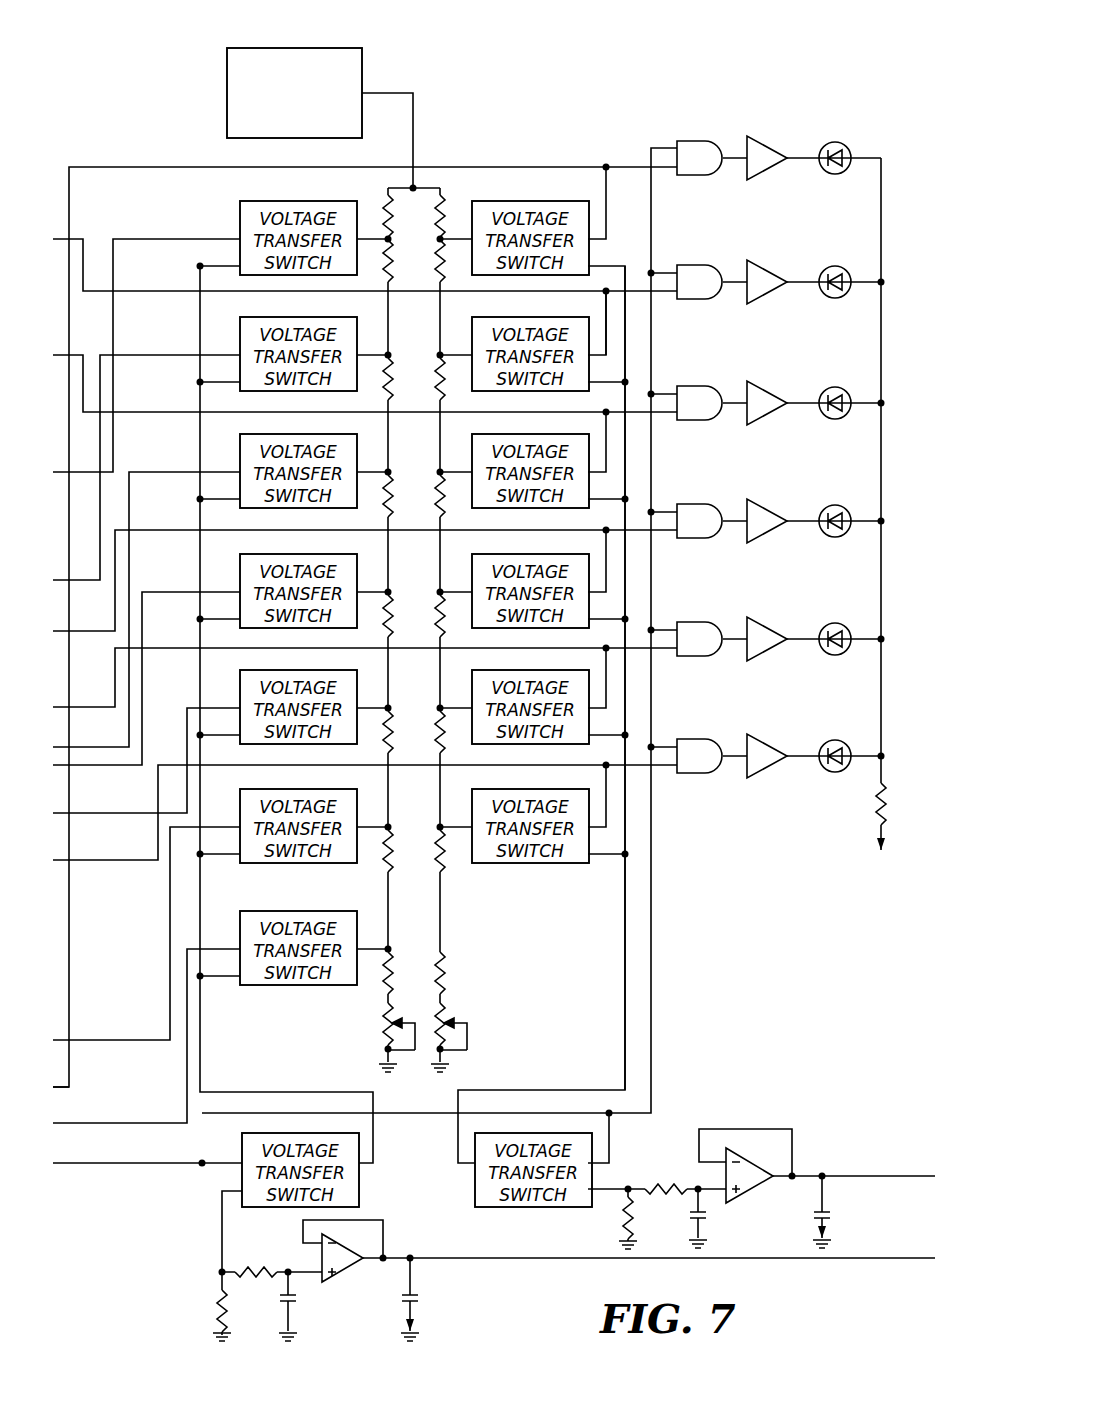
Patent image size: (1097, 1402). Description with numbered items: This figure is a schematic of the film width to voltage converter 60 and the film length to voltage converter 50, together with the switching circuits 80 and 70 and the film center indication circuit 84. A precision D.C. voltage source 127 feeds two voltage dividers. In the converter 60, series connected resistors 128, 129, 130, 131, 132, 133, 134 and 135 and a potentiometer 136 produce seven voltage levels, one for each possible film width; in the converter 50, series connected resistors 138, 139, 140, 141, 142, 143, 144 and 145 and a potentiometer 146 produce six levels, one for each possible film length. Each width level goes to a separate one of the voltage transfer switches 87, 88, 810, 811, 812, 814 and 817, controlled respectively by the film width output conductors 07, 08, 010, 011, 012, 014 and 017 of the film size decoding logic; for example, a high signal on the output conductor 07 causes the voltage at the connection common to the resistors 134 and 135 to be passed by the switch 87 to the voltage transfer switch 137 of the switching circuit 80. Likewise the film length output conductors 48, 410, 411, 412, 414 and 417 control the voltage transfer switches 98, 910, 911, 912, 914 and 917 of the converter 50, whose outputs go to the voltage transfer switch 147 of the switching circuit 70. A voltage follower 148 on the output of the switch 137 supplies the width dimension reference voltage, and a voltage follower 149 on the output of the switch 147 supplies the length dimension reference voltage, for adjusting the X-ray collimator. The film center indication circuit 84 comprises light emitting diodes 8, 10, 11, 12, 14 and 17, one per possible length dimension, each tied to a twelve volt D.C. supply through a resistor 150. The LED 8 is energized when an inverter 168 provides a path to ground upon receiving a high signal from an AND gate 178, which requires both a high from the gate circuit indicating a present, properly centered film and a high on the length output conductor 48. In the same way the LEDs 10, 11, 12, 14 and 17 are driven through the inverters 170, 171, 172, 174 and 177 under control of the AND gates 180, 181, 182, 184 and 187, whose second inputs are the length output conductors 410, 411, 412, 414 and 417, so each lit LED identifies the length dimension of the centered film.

The precision D.C. voltage source 127 is at (314, 46).
The film width to voltage converter 60 is at (181, 150).
The film length to voltage converter 50 is at (559, 153).
The film center indication circuit 84 is at (764, 131).
The switching circuit 80 is at (205, 1214).
The switching circuit 70 is at (675, 1141).
The voltage transfer switch 817 is at (238, 200).
The voltage transfer switch 814 is at (318, 317).
The voltage transfer switch 812 is at (327, 424).
The voltage transfer switch 811 is at (327, 544).
The voltage transfer switch 810 is at (327, 660).
The voltage transfer switch 88 is at (300, 864).
The voltage transfer switch 87 is at (296, 986).
The voltage transfer switch 917 is at (558, 201).
The voltage transfer switch 914 is at (550, 317).
The voltage transfer switch 912 is at (559, 424).
The voltage transfer switch 911 is at (559, 544).
The voltage transfer switch 910 is at (559, 660).
The voltage transfer switch 98 is at (533, 864).
The voltage transfer switch 137 is at (359, 1187).
The voltage transfer switch 147 is at (535, 1208).
The resistor 128 is at (383, 198).
The resistor 129 is at (395, 268).
The resistor 130 is at (394, 360).
The resistor 131 is at (394, 486).
The resistor 132 is at (394, 608).
The resistor 133 is at (394, 728).
The resistor 134 is at (396, 842).
The resistor 135 is at (394, 967).
The potentiometer 136 is at (384, 1022).
The resistor 138 is at (442, 200).
The resistor 139 is at (442, 262).
The resistor 140 is at (444, 386).
The resistor 141 is at (446, 504).
The resistor 142 is at (446, 622).
The resistor 143 is at (437, 740).
The resistor 144 is at (436, 862).
The resistor 145 is at (450, 980).
The potentiometer 146 is at (450, 1020).
The voltage follower 148 is at (366, 1315).
The voltage follower 149 is at (781, 1232).
The resistor 150 is at (887, 801).
The AND gate 187 is at (703, 140).
The AND gate 184 is at (705, 266).
The AND gate 182 is at (705, 387).
The AND gate 181 is at (705, 505).
The AND gate 180 is at (705, 623).
The AND gate 178 is at (704, 740).
The inverter 177 is at (774, 150).
The inverter 174 is at (772, 272).
The inverter 172 is at (773, 392).
The inverter 171 is at (773, 508).
The inverter 170 is at (773, 626).
The inverter 168 is at (768, 770).
The light emitting diode 17 is at (833, 175).
The light emitting diode 14 is at (835, 266).
The light emitting diode 12 is at (835, 387).
The light emitting diode 11 is at (836, 505).
The light emitting diode 10 is at (836, 623).
The light emitting diode 8 is at (834, 773).
The film length output conductor 414 is at (83, 236).
The film length output conductor 412 is at (78, 351).
The film length output conductor 411 is at (83, 630).
The film length output conductor 410 is at (80, 706).
The film length output conductor 417 is at (73, 1083).
The film length output conductor 48 is at (106, 862).
The film width output conductor 017 is at (80, 470).
The film width output conductor 014 is at (80, 578).
The film width output conductor 012 is at (83, 746).
The film width output conductor 011 is at (93, 767).
The film width output conductor 010 is at (93, 815).
The film width output conductor 08 is at (91, 1040).
The film width output conductor 07 is at (92, 1124).